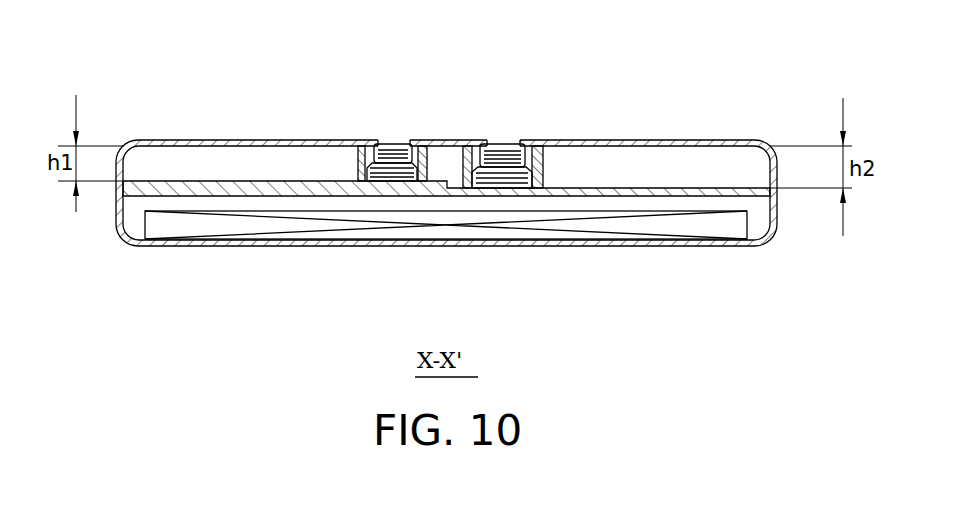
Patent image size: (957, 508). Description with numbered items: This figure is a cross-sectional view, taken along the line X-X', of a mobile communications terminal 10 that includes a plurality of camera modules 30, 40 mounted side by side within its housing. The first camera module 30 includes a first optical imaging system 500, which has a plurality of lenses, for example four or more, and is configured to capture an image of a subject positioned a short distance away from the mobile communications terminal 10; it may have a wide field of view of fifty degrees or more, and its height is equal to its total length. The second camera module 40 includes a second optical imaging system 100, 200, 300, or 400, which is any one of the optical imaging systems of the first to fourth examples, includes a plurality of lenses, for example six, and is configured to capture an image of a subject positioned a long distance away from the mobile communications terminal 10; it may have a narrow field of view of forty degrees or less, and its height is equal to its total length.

The mobile communications terminal 10 is at (708, 134).
The first camera module 30 is at (392, 176).
The second camera module 40 is at (507, 176).
The second optical imaging system 100 is at (497, 98).
The second optical imaging system 200 is at (497, 98).
The second optical imaging system 300 is at (497, 98).
The second optical imaging system 400 is at (506, 134).
The first optical imaging system 500 is at (395, 134).